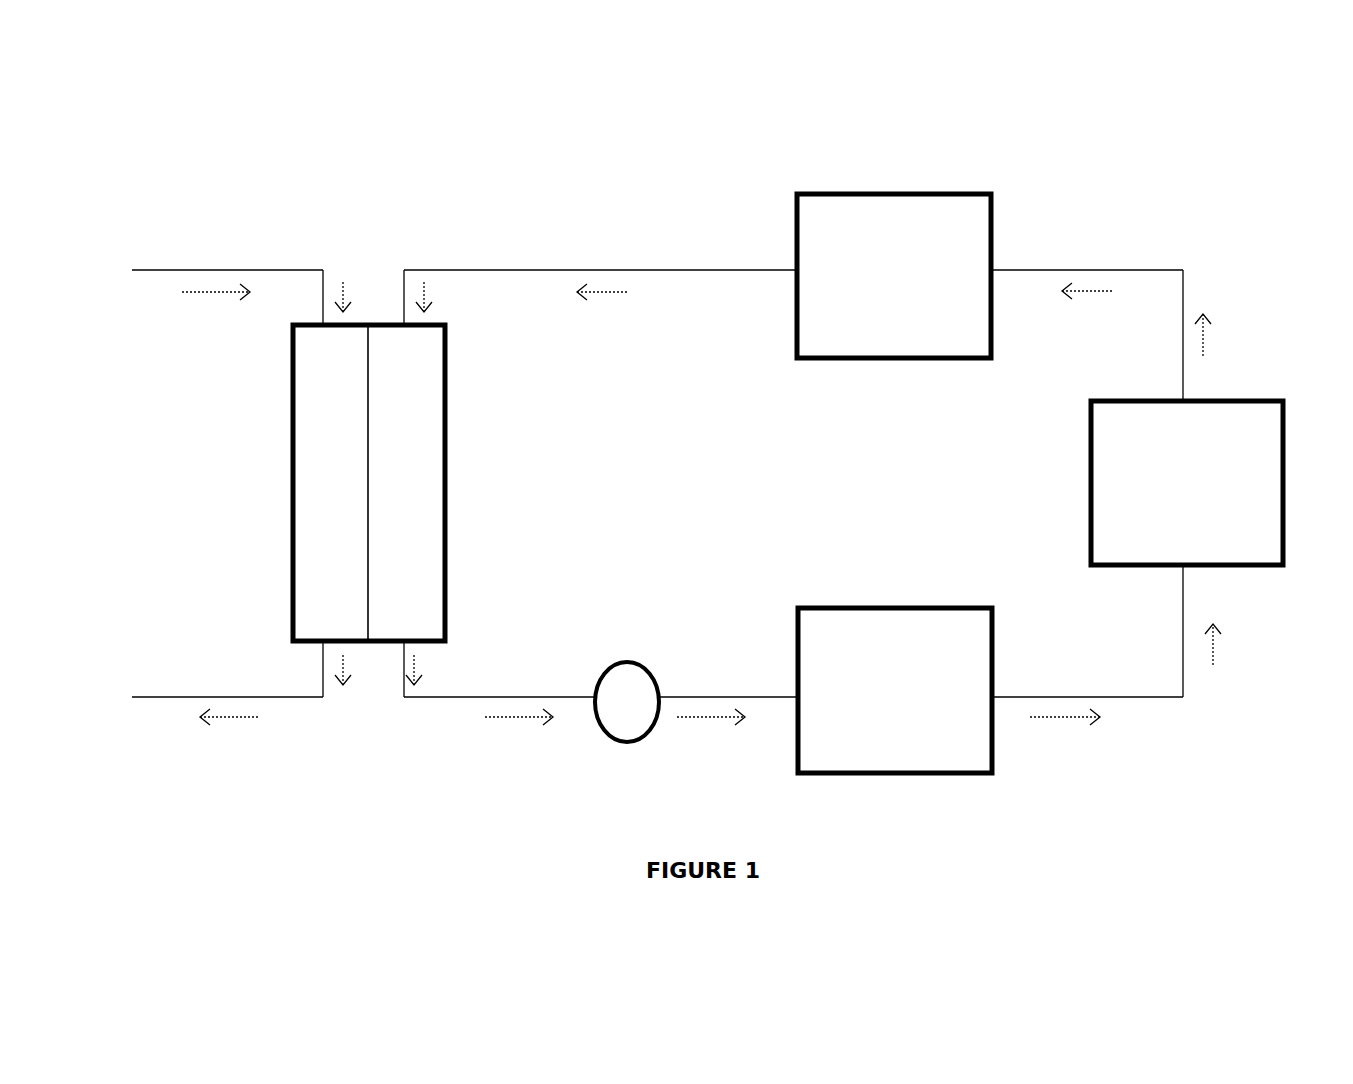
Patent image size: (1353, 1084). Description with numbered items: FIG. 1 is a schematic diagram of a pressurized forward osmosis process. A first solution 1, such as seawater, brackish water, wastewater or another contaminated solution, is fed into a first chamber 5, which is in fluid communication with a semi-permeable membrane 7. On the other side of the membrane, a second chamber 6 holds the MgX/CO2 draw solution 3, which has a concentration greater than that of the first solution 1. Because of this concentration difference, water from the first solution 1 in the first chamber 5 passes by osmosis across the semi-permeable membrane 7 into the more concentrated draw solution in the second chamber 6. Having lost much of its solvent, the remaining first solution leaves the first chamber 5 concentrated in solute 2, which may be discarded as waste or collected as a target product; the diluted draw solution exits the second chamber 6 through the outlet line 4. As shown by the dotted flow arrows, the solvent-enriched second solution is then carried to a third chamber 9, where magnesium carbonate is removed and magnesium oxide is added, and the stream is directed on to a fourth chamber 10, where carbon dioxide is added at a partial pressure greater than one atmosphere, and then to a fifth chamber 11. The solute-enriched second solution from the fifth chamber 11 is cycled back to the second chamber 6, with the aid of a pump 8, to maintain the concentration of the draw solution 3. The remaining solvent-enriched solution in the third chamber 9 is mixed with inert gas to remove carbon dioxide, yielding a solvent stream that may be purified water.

The first solution 1 is at (236, 277).
The solute 2 is at (236, 698).
The draw solution 3 is at (600, 277).
The diluted draw solution outlet line 4 is at (499, 698).
The first chamber 5 is at (330, 483).
The second chamber 6 is at (406, 483).
The semi-permeable membrane 7 is at (381, 483).
The pump 8 is at (627, 724).
The third chamber 9 is at (895, 714).
The fourth chamber 10 is at (1187, 506).
The fifth chamber 11 is at (894, 255).